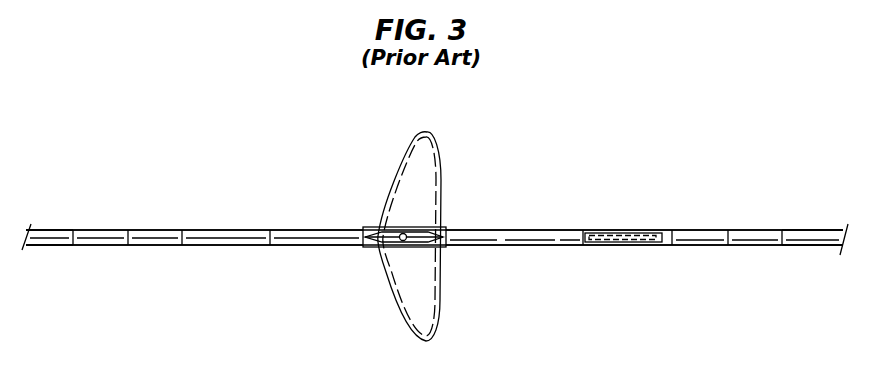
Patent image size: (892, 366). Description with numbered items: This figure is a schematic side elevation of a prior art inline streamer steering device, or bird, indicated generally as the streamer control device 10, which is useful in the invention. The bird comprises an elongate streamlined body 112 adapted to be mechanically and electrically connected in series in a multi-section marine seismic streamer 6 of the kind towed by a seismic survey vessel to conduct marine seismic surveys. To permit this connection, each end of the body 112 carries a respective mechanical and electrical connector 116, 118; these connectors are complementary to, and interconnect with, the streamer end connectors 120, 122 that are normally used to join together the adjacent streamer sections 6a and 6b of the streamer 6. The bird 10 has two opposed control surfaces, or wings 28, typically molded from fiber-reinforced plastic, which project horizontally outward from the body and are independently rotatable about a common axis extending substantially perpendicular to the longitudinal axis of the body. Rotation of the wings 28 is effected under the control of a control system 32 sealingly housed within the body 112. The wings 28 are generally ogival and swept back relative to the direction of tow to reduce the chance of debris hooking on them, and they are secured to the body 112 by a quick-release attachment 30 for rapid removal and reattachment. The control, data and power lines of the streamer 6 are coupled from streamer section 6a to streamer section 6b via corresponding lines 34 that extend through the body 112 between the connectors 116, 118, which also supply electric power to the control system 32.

The streamer control device 10 is at (552, 174).
The multi-section marine seismic streamer 6 is at (50, 247).
The streamer section 6a is at (47, 230).
The streamer section 6b is at (818, 230).
The streamer end connector 120 is at (101, 230).
The mechanical and electrical connector 116 is at (155, 230).
The lines 34 is at (300, 230).
The quick-release attachment 30 is at (403, 243).
The wings 28 is at (420, 143).
The elongate streamlined body 112 is at (513, 230).
The control system 32 is at (618, 233).
The mechanical and electrical connector 118 is at (700, 230).
The streamer end connector 122 is at (752, 230).